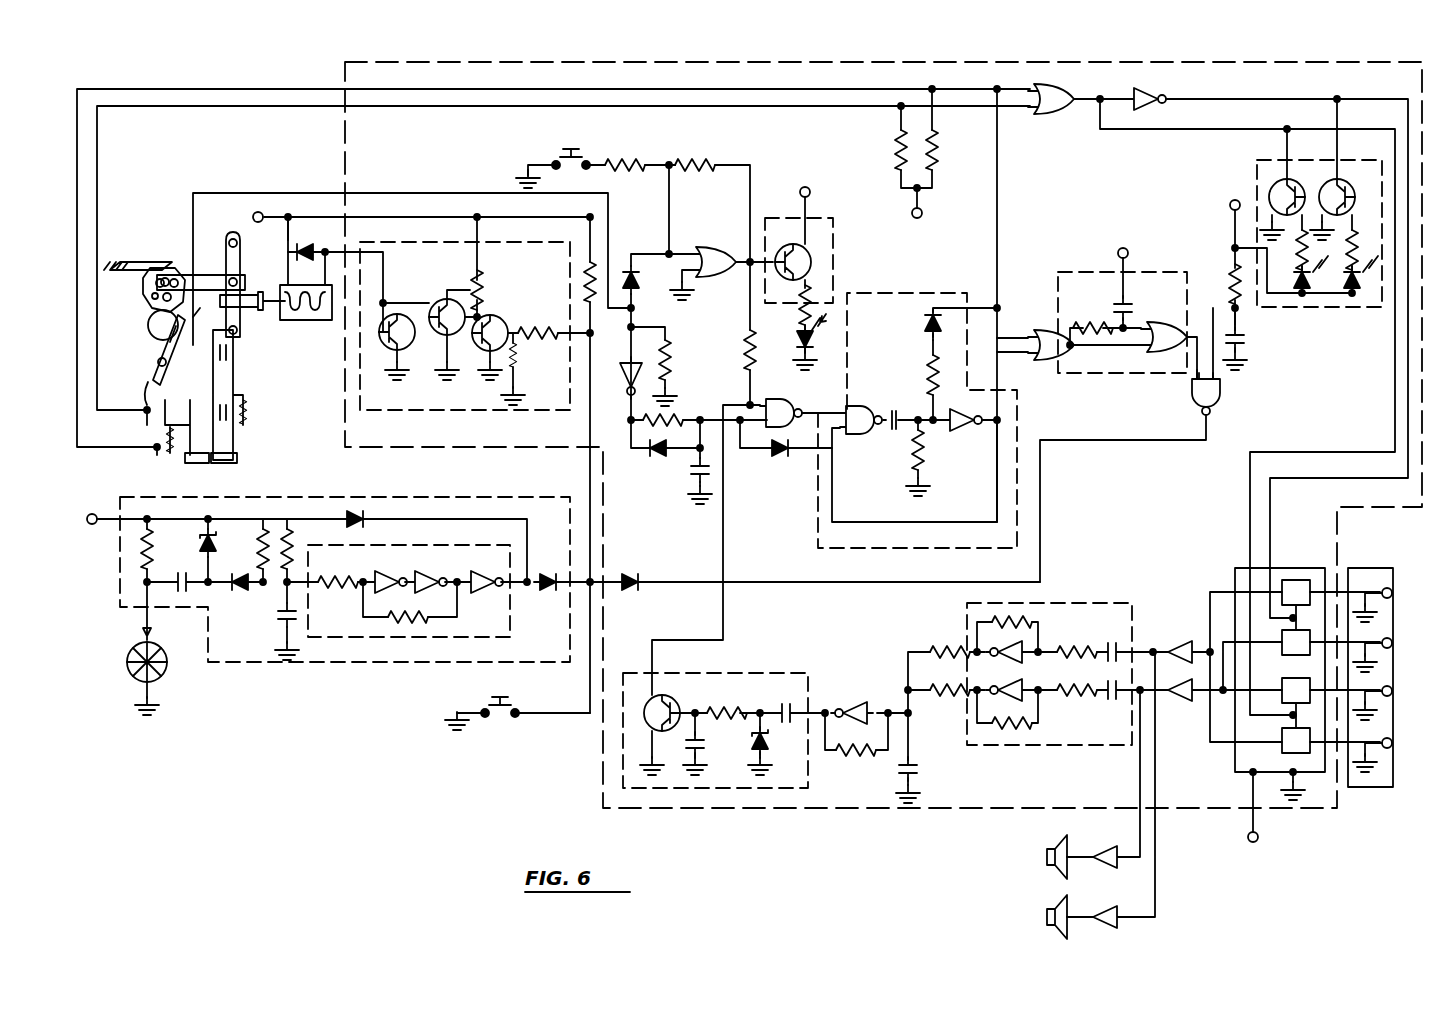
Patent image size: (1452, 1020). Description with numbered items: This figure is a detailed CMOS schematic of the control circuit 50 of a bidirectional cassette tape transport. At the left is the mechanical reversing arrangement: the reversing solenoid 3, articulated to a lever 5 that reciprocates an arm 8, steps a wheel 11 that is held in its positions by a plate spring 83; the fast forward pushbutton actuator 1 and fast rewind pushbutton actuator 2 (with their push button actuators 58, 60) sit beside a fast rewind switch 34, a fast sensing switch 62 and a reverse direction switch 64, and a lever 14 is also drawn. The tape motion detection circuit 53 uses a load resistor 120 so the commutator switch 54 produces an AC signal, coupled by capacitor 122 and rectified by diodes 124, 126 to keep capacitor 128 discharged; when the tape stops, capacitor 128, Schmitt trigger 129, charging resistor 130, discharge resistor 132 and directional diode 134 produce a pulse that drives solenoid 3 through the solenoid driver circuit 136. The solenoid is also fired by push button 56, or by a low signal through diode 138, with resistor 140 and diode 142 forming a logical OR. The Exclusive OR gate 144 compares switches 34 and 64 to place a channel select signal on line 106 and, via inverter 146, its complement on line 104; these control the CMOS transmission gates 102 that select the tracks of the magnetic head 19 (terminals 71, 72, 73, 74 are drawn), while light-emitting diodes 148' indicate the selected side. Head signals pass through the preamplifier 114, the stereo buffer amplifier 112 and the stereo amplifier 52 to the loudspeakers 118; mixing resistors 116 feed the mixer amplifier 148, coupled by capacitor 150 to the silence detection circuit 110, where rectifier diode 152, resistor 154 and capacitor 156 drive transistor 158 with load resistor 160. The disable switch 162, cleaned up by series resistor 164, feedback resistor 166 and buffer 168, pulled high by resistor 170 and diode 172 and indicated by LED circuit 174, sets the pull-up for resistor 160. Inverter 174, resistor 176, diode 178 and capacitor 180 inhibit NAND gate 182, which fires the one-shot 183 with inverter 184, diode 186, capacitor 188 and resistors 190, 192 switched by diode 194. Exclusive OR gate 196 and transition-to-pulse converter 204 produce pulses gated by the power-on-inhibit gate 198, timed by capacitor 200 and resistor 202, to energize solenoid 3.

The fast forward pushbutton actuator 1 is at (235, 378).
The fast rewind pushbutton actuator 2 is at (190, 395).
The reversing solenoid 3 is at (310, 320).
The lever 5 is at (240, 260).
The arm 8 is at (212, 275).
The wheel 11 is at (143, 290).
The pawl lever 14 is at (152, 328).
The magnetic head 19 is at (1385, 790).
The fast rewind switch 34 is at (147, 423).
The control circuit 50 is at (858, 812).
The stereo amplifier 52 is at (1120, 912).
The tape motion detection circuit 53 is at (278, 665).
The commutator switch 54 is at (127, 660).
The push button 56 is at (500, 720).
The fast forward push button actuator 58 is at (228, 463).
The fast rewind push button actuator 60 is at (186, 463).
The fast sensing switch 62 is at (202, 333).
The switch 64 is at (146, 390).
The switch A terminal 71 is at (1389, 601).
The switch B terminal 72 is at (1389, 652).
The switch C terminal 73 is at (1389, 701).
The switch D terminal 74 is at (1389, 752).
The plate spring 83 is at (145, 260).
The CMOS transmission gates 102 is at (1302, 566).
The line 104 is at (1240, 102).
The line 106 is at (1200, 132).
The silence detection circuit 110 is at (615, 778).
The stereo buffer amplifier 112 is at (1088, 600).
The preamplifier 114 is at (1175, 690).
The resistors 116 is at (945, 682).
The loudspeakers 118 is at (1048, 907).
The load resistor 120 is at (140, 552).
The capacitor 122 is at (182, 592).
The diode 124 is at (200, 535).
The diode 126 is at (242, 592).
The capacitor 128 is at (276, 620).
The Schmitt trigger 129 is at (358, 640).
The charging resistor 130 is at (262, 535).
The discharge resistor 132 is at (288, 535).
The directional diode 134 is at (355, 508).
The solenoid driver circuit 136 is at (440, 238).
The diode 138 is at (628, 575).
The resistor 140 is at (582, 268).
The diode 142 is at (898, 138).
The Exclusive OR gate 144 is at (1070, 112).
The inverter 146 is at (1160, 92).
The mixer amplifier 148 is at (865, 707).
The mixing amplifier 148' is at (1319, 225).
The capacitor 150 is at (788, 698).
The rectifier diode 152 is at (772, 752).
The resistor 154 is at (738, 705).
The capacitor 156 is at (708, 760).
The transistor 158 is at (678, 698).
The load resistor 160 is at (745, 345).
The disable switch 162 is at (560, 150).
The series resistor 164 is at (627, 158).
The feedback resistor 166 is at (702, 158).
The positive-gain buffer 168 is at (700, 245).
The resistor 170 is at (673, 362).
The diode 172 is at (632, 262).
The light-emitting diode circuit / inverter 174 is at (838, 263).
The resistor 176 is at (685, 415).
The directional diode 178 is at (645, 446).
The capacitor 180 is at (695, 475).
The NAND gate 182 is at (775, 455).
The one-shot circuit 183 is at (808, 535).
The inverter 184 is at (968, 432).
The directional diode 186 is at (788, 430).
The capacitor 188 is at (890, 410).
The resistor 190 is at (908, 455).
The resistor 192 is at (925, 368).
The switching diode 194 is at (925, 322).
The Exclusive OR gate 196 is at (1022, 330).
The power-on-inhibit gate 198 is at (1222, 395).
The capacitor 200 is at (1250, 340).
The resistor 202 is at (1228, 270).
The transition-to-pulse converter circuit 204 is at (1075, 268).